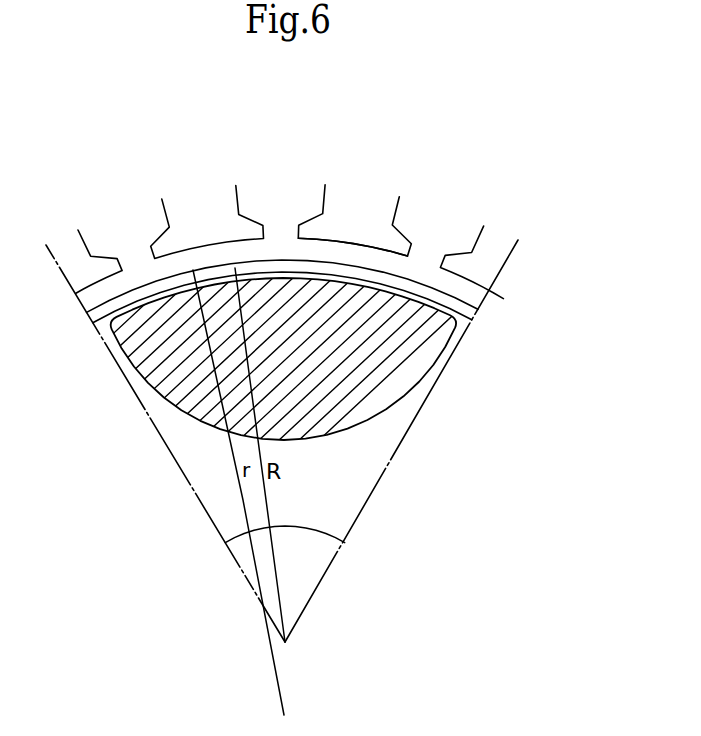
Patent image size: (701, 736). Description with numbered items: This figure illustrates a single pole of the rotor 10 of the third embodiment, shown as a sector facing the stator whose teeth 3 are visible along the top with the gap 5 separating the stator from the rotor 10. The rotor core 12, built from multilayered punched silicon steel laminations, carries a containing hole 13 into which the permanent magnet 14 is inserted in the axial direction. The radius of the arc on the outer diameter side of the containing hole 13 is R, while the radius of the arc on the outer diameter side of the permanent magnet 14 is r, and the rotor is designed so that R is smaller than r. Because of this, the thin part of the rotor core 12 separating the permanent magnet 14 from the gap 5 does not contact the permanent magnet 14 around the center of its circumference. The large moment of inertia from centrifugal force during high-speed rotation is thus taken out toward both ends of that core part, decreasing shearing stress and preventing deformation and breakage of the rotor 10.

The teeth 3 is at (357, 215).
The gap 5 is at (375, 260).
The rotor 10 is at (443, 290).
The rotor core 12 is at (192, 277).
The containing hole 13 is at (287, 277).
The permanent magnet 14 is at (378, 360).